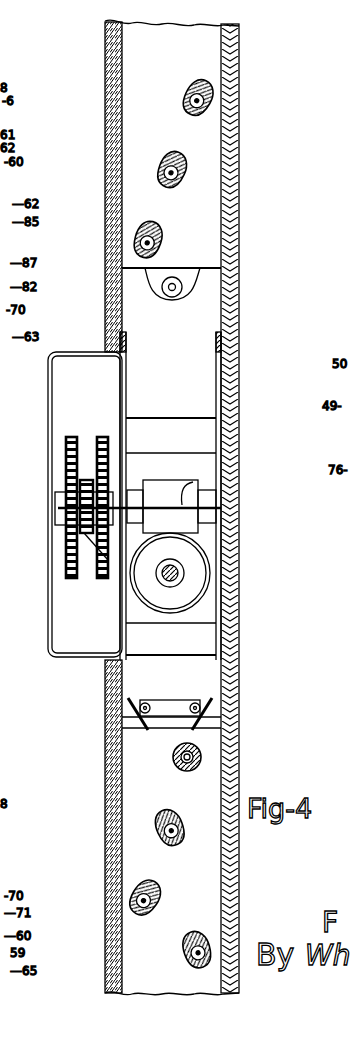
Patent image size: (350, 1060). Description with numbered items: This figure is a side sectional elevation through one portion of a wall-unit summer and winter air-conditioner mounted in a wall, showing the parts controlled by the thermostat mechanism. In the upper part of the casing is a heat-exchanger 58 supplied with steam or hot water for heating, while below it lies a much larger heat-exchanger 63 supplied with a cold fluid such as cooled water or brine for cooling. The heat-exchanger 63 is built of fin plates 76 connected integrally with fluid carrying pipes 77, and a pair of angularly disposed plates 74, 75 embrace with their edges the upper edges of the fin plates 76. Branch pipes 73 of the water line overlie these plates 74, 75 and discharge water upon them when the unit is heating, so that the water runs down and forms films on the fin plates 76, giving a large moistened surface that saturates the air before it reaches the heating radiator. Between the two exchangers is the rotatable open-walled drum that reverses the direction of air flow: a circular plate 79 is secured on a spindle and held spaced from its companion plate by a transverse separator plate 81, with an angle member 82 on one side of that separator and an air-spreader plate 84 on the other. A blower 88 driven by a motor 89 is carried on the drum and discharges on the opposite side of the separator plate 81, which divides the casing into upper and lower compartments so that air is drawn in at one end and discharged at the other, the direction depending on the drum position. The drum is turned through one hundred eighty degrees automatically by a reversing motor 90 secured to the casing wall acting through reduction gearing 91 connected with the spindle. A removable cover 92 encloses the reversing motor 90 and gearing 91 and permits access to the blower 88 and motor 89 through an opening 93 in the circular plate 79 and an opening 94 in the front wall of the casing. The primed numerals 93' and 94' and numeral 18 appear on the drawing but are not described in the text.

The heat-exchanger 58 is at (210, 192).
The heat-exchanger 63 is at (206, 872).
The inner frame 18 is at (219, 345).
The branch pipes 73 is at (168, 297).
The circular plate 79 is at (126, 378).
The removable cover 92 is at (66, 455).
The reduction gearing 91 is at (97, 468).
The reversing motor 90 is at (118, 486).
The opening 94 is at (87, 455).
The shaft 94' is at (139, 504).
The air-spreader plate 84 is at (185, 433).
The blower 88 is at (159, 492).
The separator plate 81 is at (190, 480).
The motor 89 is at (193, 558).
The angle member 82 is at (200, 641).
The opening 93 is at (152, 644).
The spring end 93' is at (80, 498).
The angularly disposed plate 74 is at (208, 721).
The angularly disposed plate 75 is at (128, 713).
The fin plates 76 is at (170, 730).
The fluid carrying pipes 77 is at (187, 767).